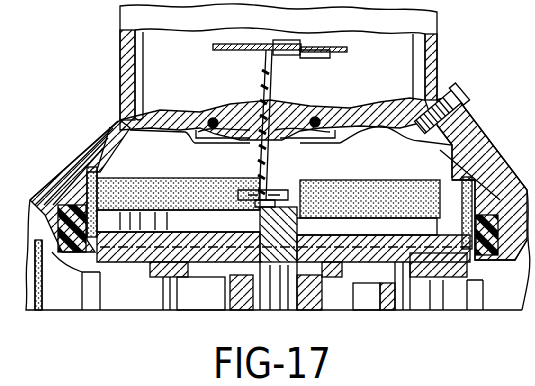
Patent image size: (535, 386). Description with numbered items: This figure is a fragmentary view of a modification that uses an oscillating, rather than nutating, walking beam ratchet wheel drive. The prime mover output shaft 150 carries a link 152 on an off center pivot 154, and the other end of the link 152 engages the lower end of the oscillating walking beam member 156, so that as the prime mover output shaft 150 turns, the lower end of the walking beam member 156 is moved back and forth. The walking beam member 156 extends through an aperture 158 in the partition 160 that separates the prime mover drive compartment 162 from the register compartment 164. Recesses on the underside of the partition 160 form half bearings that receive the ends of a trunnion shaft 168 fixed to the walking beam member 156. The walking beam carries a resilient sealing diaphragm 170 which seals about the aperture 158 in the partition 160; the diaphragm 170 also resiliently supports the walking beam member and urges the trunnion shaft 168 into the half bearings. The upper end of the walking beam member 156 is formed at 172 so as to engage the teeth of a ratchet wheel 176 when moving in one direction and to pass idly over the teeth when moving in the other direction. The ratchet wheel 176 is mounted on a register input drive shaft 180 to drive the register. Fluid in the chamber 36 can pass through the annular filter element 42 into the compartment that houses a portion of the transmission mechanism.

The chamber 36 is at (74, 197).
The annular filter element 42 is at (86, 180).
The prime mover output shaft 150 is at (332, 185).
The link 152 is at (307, 180).
The off center pivot 154 is at (259, 212).
The oscillating walking beam member 156 is at (222, 180).
The aperture 158 is at (272, 118).
The partition 160 is at (368, 124).
The prime mover drive compartment 162 is at (440, 153).
The register compartment 164 is at (400, 66).
The trunnion shaft 168 is at (256, 124).
The resilient sealing diaphragm 170 is at (255, 142).
The upper end of walking beam member 172 is at (265, 62).
The ratchet wheel 176 is at (212, 48).
The register input drive shaft 180 is at (275, 50).